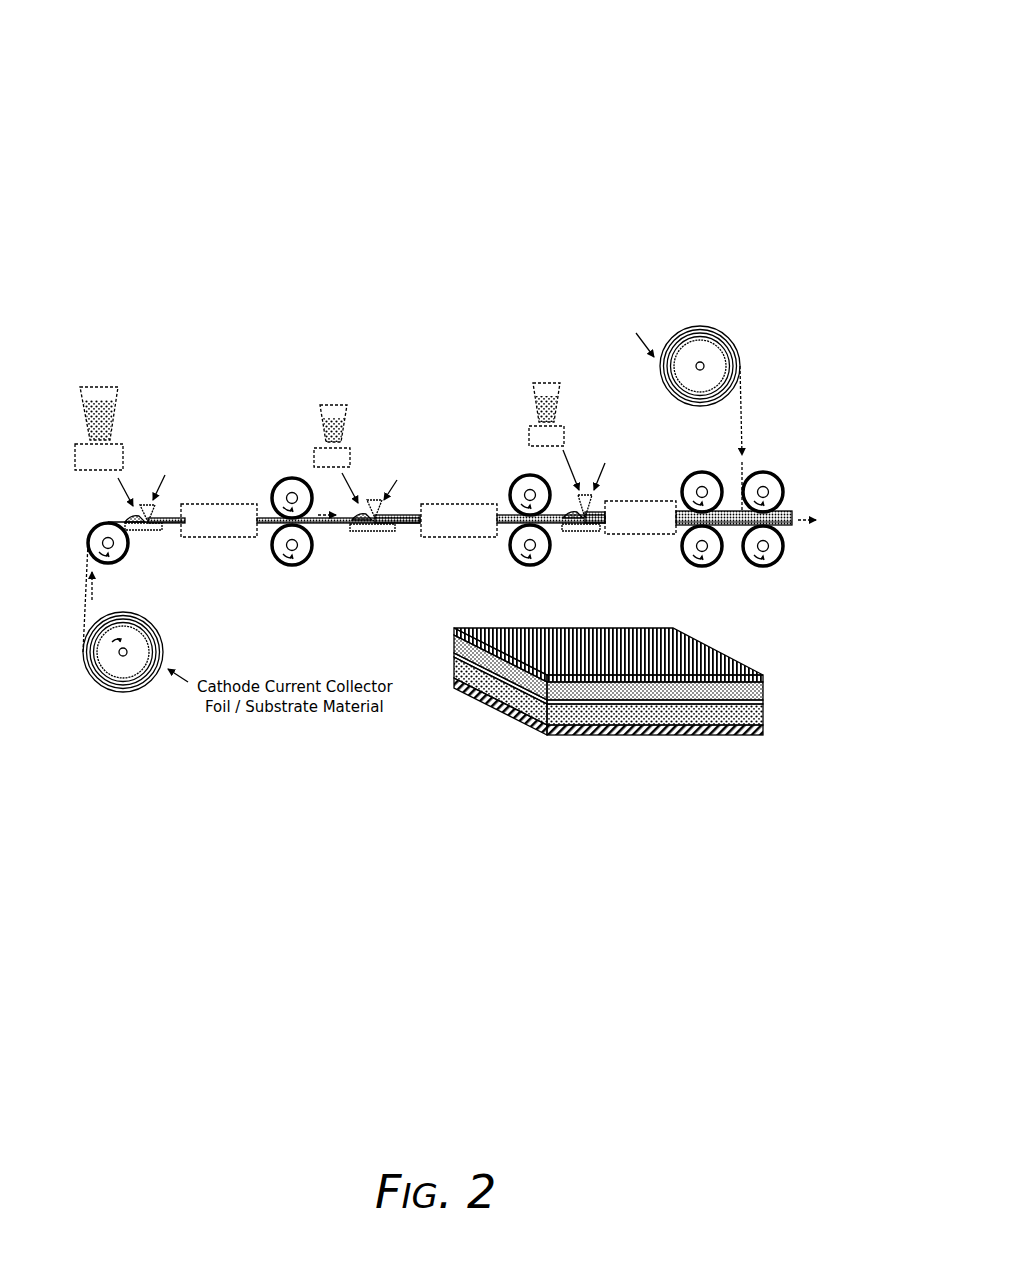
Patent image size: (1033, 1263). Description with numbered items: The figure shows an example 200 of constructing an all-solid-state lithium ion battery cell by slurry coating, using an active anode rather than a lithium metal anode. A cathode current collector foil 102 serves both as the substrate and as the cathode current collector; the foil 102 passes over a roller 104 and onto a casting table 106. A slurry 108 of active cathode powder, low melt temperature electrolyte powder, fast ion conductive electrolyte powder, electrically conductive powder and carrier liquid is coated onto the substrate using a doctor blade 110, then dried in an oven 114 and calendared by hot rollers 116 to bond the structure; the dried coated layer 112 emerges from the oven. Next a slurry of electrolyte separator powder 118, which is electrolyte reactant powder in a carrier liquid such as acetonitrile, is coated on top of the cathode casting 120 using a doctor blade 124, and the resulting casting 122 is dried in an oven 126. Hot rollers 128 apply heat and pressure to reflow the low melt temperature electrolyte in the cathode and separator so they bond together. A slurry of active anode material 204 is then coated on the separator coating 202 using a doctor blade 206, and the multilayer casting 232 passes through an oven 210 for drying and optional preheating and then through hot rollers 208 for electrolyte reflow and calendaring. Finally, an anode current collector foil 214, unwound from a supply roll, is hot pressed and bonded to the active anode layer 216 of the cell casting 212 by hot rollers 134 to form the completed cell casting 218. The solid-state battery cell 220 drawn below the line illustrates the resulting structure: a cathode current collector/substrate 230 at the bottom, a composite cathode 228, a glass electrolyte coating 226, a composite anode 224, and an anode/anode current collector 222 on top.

The example of constructing an all-solid-state lithium ion battery cell 200 is at (636, 80).
The cathode current collector foil 102 is at (84, 595).
The roller 104 is at (114, 566).
The casting table 106 is at (141, 531).
The slurry 108 is at (105, 404).
The doctor blade 110 is at (153, 509).
The dried cathode layer 112 is at (176, 531).
The oven 114 is at (234, 502).
The hot rollers 116 is at (306, 478).
The slurry of electrolyte separator powder 118 is at (322, 427).
The cathode casting 120 is at (318, 529).
The casting 122 is at (394, 530).
The doctor blade 124 is at (382, 503).
The oven 126 is at (466, 537).
The hot rollers 128 is at (511, 483).
The hot rollers 134 is at (783, 480).
The separator coating 202 is at (559, 514).
The slurry of active anode material 204 is at (535, 397).
The doctor blade 206 is at (590, 495).
The hot rollers 208 is at (689, 561).
The oven 210 is at (632, 537).
The cell casting 212 is at (739, 534).
The anode current collector foil 214 is at (744, 408).
The active anode layer 216 is at (730, 500).
The completed cell casting 218 is at (784, 530).
The solid-state battery cell 220 is at (601, 662).
The anode/anode current collector 222 is at (500, 630).
The composite anode 224 is at (455, 643).
The glass electrolyte coating 226 is at (453, 658).
The composite cathode 228 is at (455, 669).
The cathode current collector/substrate 230 is at (482, 706).
The multilayer casting 232 is at (594, 530).